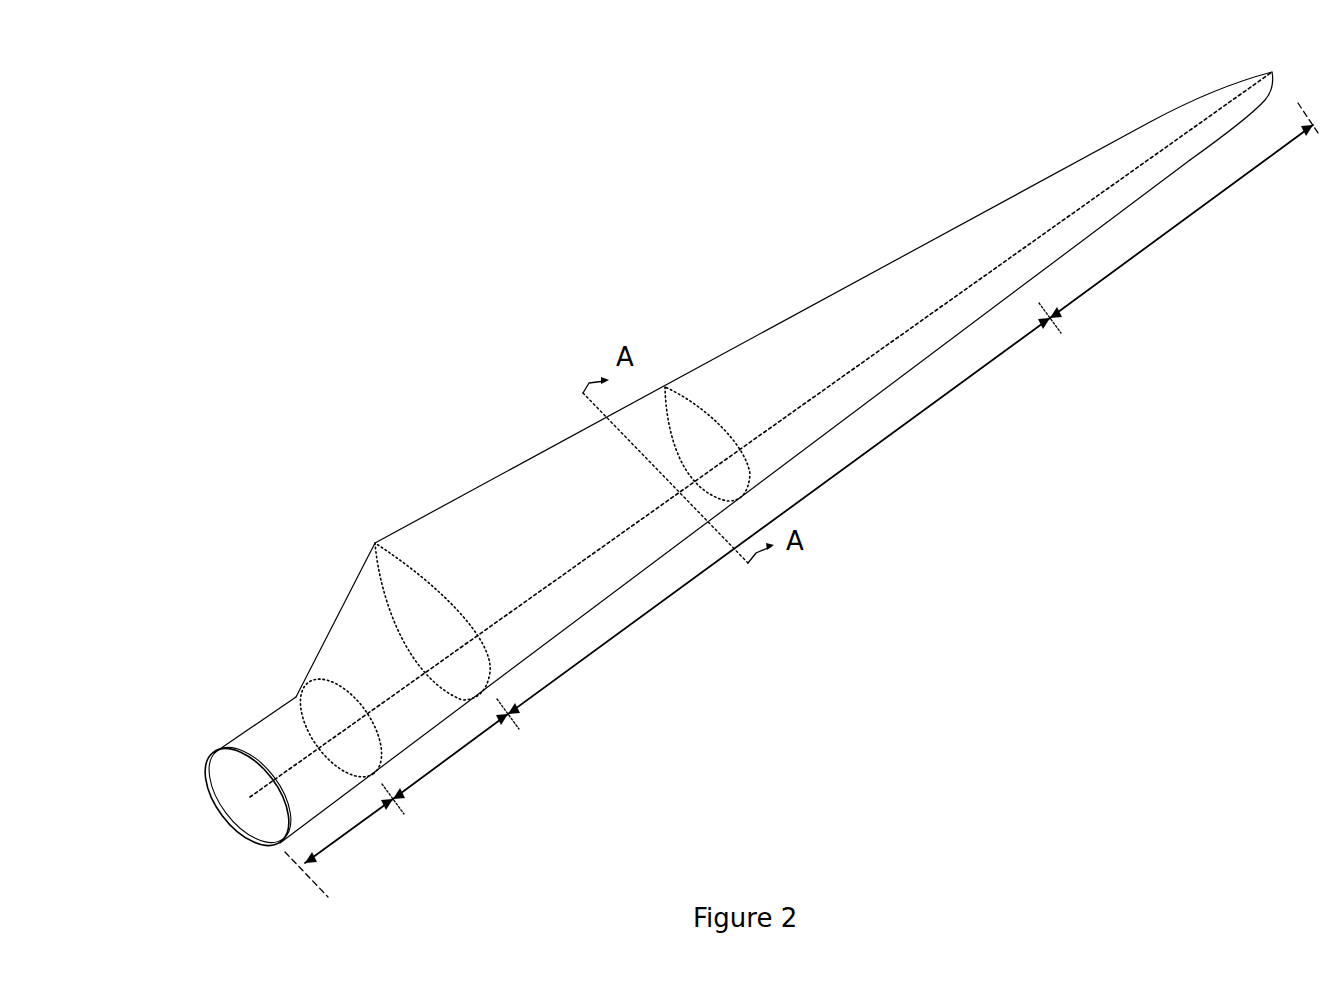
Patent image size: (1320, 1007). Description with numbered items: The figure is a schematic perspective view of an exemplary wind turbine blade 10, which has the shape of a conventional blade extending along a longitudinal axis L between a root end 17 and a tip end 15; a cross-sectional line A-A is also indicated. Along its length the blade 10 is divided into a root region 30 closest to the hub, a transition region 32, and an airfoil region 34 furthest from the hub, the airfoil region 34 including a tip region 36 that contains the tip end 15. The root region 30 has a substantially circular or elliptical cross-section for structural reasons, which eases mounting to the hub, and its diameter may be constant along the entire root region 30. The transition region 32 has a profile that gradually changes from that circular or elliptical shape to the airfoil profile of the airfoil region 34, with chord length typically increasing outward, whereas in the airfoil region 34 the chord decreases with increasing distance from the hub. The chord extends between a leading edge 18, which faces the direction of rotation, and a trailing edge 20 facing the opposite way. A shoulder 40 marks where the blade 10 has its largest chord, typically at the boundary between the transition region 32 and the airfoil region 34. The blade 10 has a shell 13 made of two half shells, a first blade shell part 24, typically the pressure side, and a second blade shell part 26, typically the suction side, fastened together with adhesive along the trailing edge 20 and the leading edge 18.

The wind turbine blade 10 is at (776, 442).
The shell 13 is at (360, 637).
The tip end 15 is at (1271, 70).
The root end 17 is at (228, 768).
The leading edge 18 is at (950, 341).
The trailing edge 20 is at (832, 297).
The first blade shell part 24 is at (226, 761).
The second blade shell part 26 is at (234, 820).
The root region 30 is at (357, 820).
The transition region 32 is at (458, 758).
The airfoil region 34 is at (830, 480).
The tip region 36 is at (1163, 238).
The shoulder 40 is at (375, 543).
The longitudinal axis L is at (251, 797).